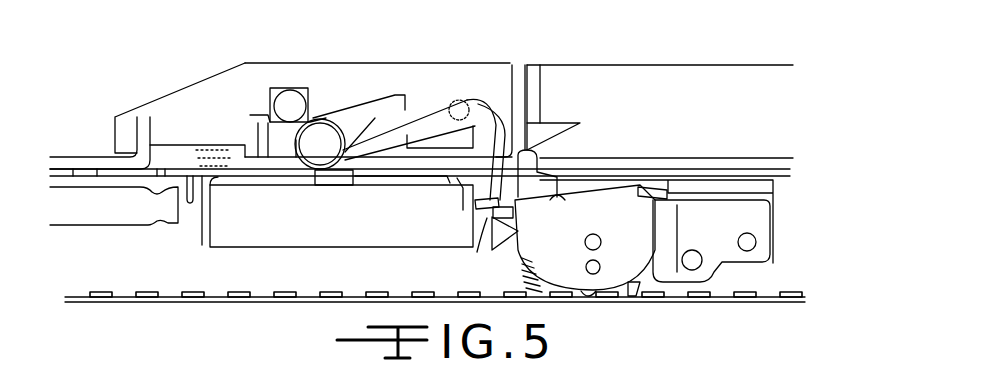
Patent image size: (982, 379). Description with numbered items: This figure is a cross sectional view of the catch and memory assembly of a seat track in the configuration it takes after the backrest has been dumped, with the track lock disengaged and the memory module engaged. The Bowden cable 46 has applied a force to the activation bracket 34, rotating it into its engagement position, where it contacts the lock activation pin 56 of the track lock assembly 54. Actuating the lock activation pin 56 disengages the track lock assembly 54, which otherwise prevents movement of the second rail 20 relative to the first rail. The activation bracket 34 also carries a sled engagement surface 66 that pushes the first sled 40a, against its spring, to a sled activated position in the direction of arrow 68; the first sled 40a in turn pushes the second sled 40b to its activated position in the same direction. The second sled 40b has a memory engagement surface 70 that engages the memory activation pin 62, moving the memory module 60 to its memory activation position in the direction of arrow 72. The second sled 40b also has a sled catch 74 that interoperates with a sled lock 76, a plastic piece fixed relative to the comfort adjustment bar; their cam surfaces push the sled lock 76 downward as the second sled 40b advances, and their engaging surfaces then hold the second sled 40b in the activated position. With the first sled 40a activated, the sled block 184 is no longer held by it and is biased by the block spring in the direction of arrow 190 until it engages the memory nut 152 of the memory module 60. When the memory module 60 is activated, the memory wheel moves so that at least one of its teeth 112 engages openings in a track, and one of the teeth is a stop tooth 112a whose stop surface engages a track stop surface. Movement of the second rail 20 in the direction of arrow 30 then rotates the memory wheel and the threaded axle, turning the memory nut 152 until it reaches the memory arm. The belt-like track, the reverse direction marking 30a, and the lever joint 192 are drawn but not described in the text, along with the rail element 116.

The second rail 20 is at (785, 167).
The arrow 30 is at (143, 274).
The reverse process direction 30a is at (82, 245).
The activation bracket 34 is at (241, 145).
The first sled 40a is at (330, 77).
The second sled 40b is at (552, 130).
The Bowden cable 46 is at (672, 121).
The track lock assembly 54 is at (377, 231).
The lock activation pin 56 is at (338, 185).
The memory module 60 is at (714, 146).
The memory activation pin 62 is at (532, 162).
The sled engagement surface 66 is at (290, 100).
The arrow 68 is at (112, 84).
The memory engagement surface 70 is at (572, 140).
The arrow 72 is at (547, 250).
The sled catch 74 is at (223, 173).
The sled lock 76 is at (191, 166).
The teeth 112 is at (632, 292).
The stop tooth 112a is at (588, 297).
The belt 116 is at (747, 300).
The memory nut 152 is at (492, 218).
The sled block 184 is at (397, 133).
The arrow 190 is at (323, 129).
The joint 192 is at (463, 100).